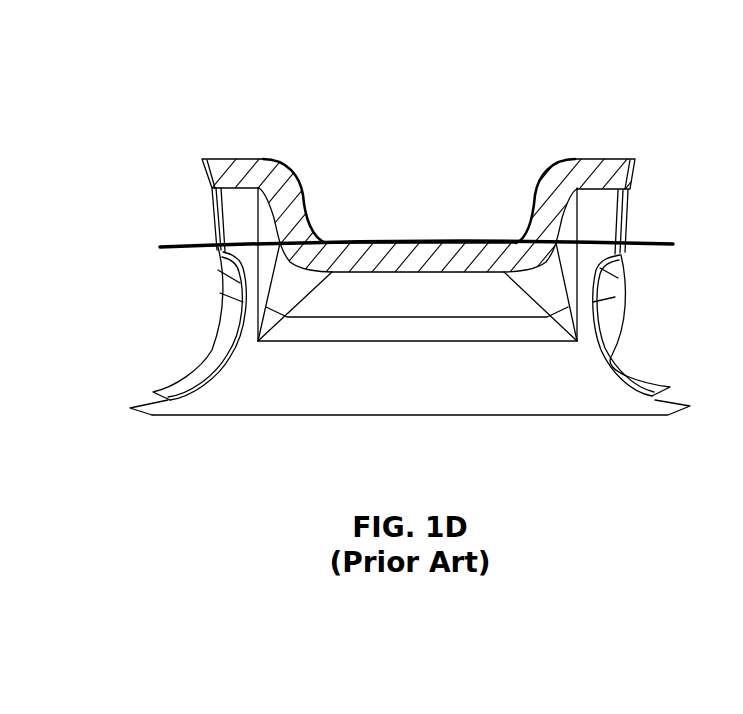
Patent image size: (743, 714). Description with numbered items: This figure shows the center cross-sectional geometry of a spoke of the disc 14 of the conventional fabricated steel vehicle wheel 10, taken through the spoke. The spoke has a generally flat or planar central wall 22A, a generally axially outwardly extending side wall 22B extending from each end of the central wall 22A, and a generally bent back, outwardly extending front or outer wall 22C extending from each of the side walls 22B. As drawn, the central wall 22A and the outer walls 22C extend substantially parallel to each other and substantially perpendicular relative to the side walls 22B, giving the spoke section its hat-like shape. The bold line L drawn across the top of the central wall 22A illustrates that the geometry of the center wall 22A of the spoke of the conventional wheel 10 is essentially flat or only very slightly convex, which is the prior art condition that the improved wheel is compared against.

The conventional fabricated steel vehicle wheel 10 is at (192, 416).
The disc 14 is at (191, 359).
The central wall 22A is at (432, 256).
The side wall 22B is at (295, 208).
The outer wall 22C is at (239, 169).
The bold line L is at (417, 239).